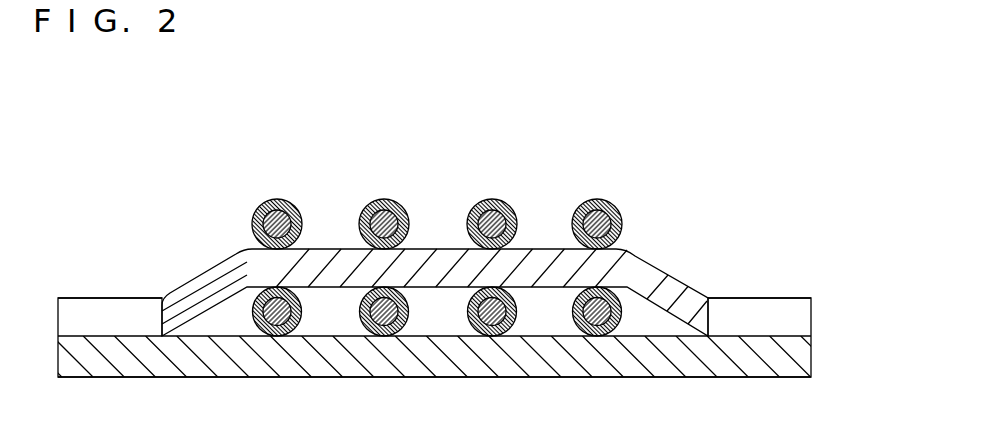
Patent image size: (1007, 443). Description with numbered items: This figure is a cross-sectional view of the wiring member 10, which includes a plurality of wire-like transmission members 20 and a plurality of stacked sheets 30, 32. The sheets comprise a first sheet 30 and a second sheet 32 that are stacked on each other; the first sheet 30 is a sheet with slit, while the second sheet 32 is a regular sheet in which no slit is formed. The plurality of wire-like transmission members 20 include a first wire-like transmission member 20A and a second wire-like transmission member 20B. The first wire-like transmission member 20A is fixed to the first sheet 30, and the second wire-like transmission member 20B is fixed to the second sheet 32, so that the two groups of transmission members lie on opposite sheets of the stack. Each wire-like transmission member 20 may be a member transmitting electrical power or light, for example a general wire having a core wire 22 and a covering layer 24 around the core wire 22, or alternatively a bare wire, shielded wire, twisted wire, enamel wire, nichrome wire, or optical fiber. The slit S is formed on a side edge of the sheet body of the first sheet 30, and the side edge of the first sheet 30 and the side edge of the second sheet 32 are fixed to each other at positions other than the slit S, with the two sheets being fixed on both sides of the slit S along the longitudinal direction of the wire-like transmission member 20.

The wiring member 10 is at (129, 138).
The wire-like transmission member 20 is at (327, 155).
The first wire-like transmission member 20A is at (466, 218).
The second wire-like transmission member 20B is at (470, 320).
The core wire 22 is at (266, 200).
The covering layer 24 is at (288, 209).
The first sheet 30 is at (667, 277).
The second sheet 32 is at (676, 368).
The slit S is at (151, 303).